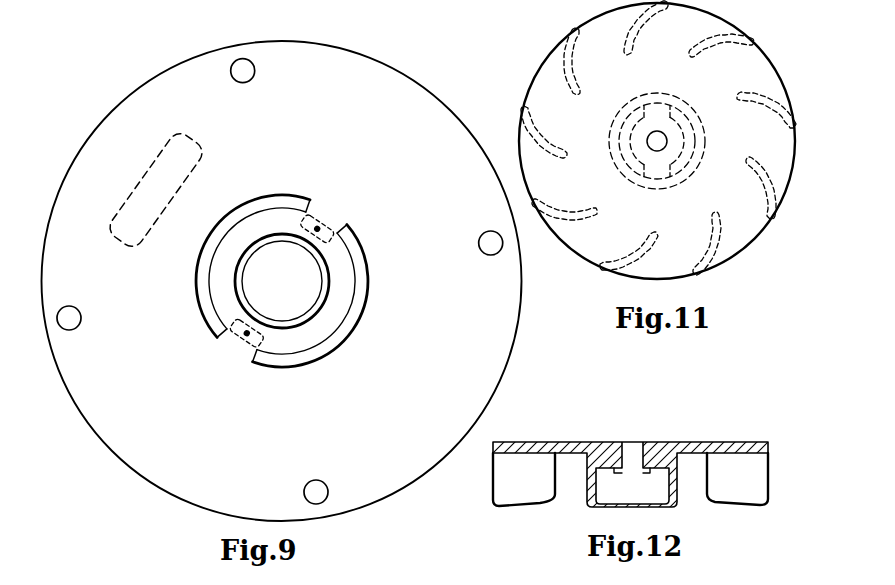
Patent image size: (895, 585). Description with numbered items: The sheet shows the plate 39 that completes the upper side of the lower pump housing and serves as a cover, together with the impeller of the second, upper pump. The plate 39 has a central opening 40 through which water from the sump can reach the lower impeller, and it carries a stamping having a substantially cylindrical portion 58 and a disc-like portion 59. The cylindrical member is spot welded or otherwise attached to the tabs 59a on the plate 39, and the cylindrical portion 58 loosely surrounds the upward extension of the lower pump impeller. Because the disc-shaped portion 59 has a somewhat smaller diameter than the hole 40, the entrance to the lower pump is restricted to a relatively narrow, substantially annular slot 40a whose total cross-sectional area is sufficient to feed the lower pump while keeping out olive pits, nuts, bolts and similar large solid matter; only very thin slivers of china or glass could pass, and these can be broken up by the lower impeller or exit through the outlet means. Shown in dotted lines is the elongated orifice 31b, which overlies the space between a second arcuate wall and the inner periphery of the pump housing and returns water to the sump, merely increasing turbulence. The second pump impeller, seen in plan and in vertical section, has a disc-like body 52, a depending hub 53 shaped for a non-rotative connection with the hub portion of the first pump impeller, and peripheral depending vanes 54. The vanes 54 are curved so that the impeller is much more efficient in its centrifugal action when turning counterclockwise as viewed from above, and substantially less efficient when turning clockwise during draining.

In FIG. 9, the plate 39 is at (366, 146).
In FIG. 9, the elongated orifice 31b is at (105, 232).
In FIG. 9, the central opening 40 is at (312, 367).
In FIG. 9, the annular slot 40a is at (268, 205).
In FIG. 9, the cylindrical portion 58 is at (240, 297).
In FIG. 9, the disc-like portion 59 is at (330, 322).
In FIG. 9, the tabs 59a is at (332, 223).
In FIG. 11, the disc-like body 52 is at (688, 221).
In FIG. 12, the disc-like body 52 is at (569, 442).
In FIG. 11, the depending hub 53 is at (698, 163).
In FIG. 12, the depending hub 53 is at (587, 503).
In FIG. 11, the peripheral depending vanes 54 is at (605, 262).
In FIG. 12, the peripheral depending vanes 54 is at (747, 487).